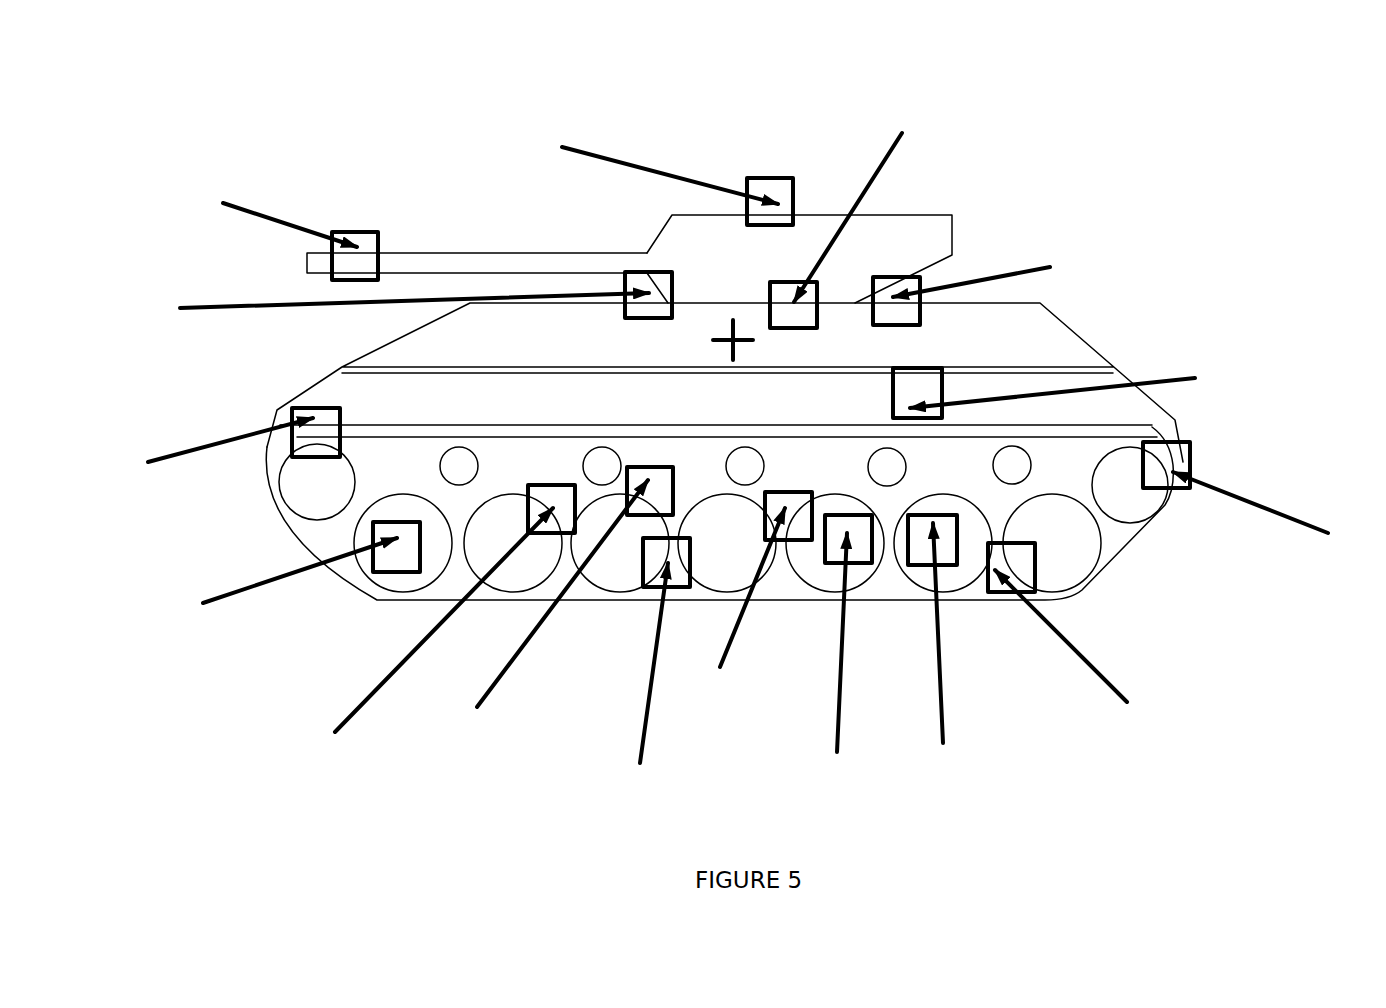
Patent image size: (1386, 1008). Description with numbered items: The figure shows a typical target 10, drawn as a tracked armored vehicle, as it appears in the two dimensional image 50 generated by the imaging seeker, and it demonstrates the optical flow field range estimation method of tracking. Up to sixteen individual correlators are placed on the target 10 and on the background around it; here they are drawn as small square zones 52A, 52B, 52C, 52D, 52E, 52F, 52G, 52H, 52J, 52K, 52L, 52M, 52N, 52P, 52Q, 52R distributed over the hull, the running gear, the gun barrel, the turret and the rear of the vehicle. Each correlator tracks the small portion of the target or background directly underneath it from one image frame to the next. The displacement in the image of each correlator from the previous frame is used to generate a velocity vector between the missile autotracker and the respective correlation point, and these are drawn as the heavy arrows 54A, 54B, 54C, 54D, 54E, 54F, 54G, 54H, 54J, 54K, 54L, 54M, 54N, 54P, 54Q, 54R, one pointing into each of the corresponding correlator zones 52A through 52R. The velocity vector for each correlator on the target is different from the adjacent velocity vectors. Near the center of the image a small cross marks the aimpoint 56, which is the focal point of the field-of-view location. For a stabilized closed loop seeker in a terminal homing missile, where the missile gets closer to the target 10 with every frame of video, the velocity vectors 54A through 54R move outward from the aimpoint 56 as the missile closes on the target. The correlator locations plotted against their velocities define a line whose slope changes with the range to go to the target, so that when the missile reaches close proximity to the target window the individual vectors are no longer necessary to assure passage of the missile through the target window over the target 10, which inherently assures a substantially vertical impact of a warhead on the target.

The target 10 is at (930, 215).
The two dimensional image 50 is at (1200, 178).
The aimpoint 56 is at (717, 341).
The correlator 52A is at (1193, 462).
The correlator 52B is at (1037, 562).
The correlator 52C is at (957, 532).
The correlator 52D is at (862, 590).
The correlator 52E is at (776, 492).
The correlator 52F is at (692, 560).
The correlator 52G is at (640, 466).
The correlator 52H is at (568, 486).
The correlator 52J is at (385, 593).
The correlator 52K is at (318, 408).
The correlator 52L is at (628, 318).
The correlator 52M is at (365, 230).
The correlator 52N is at (780, 282).
The correlator 52P is at (775, 178).
The correlator 52Q is at (898, 324).
The correlator 52R is at (893, 380).
The velocity vector 54A is at (1298, 517).
The velocity vector 54B is at (1110, 677).
The velocity vector 54C is at (947, 718).
The velocity vector 54D is at (843, 740).
The velocity vector 54E is at (740, 637).
The velocity vector 54F is at (648, 735).
The velocity vector 54G is at (493, 688).
The velocity vector 54H is at (345, 717).
The velocity vector 54J is at (225, 593).
The velocity vector 54K is at (183, 447).
The velocity vector 54L is at (197, 307).
The velocity vector 54M is at (272, 215).
The velocity vector 54N is at (885, 155).
The velocity vector 54P is at (597, 152).
The velocity vector 54Q is at (1020, 267).
The velocity vector 54R is at (1167, 377).